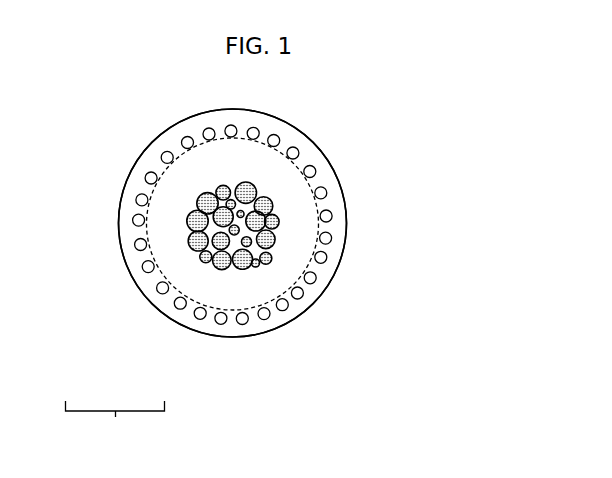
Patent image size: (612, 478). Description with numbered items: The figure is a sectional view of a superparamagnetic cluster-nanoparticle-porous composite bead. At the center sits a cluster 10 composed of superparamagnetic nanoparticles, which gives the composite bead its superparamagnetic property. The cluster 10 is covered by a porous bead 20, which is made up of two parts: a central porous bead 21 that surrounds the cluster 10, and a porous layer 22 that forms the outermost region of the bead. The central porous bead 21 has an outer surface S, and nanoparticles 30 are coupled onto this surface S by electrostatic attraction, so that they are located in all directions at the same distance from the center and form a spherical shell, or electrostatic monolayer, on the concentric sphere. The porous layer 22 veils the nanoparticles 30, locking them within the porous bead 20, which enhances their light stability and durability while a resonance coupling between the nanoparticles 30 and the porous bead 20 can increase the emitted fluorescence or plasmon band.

The cluster 10 is at (238, 233).
The porous bead 20 is at (115, 424).
The central porous bead 21 is at (173, 258).
The porous layer 22 is at (183, 314).
The nanoparticles 30 is at (308, 272).
The outer surface S is at (318, 176).